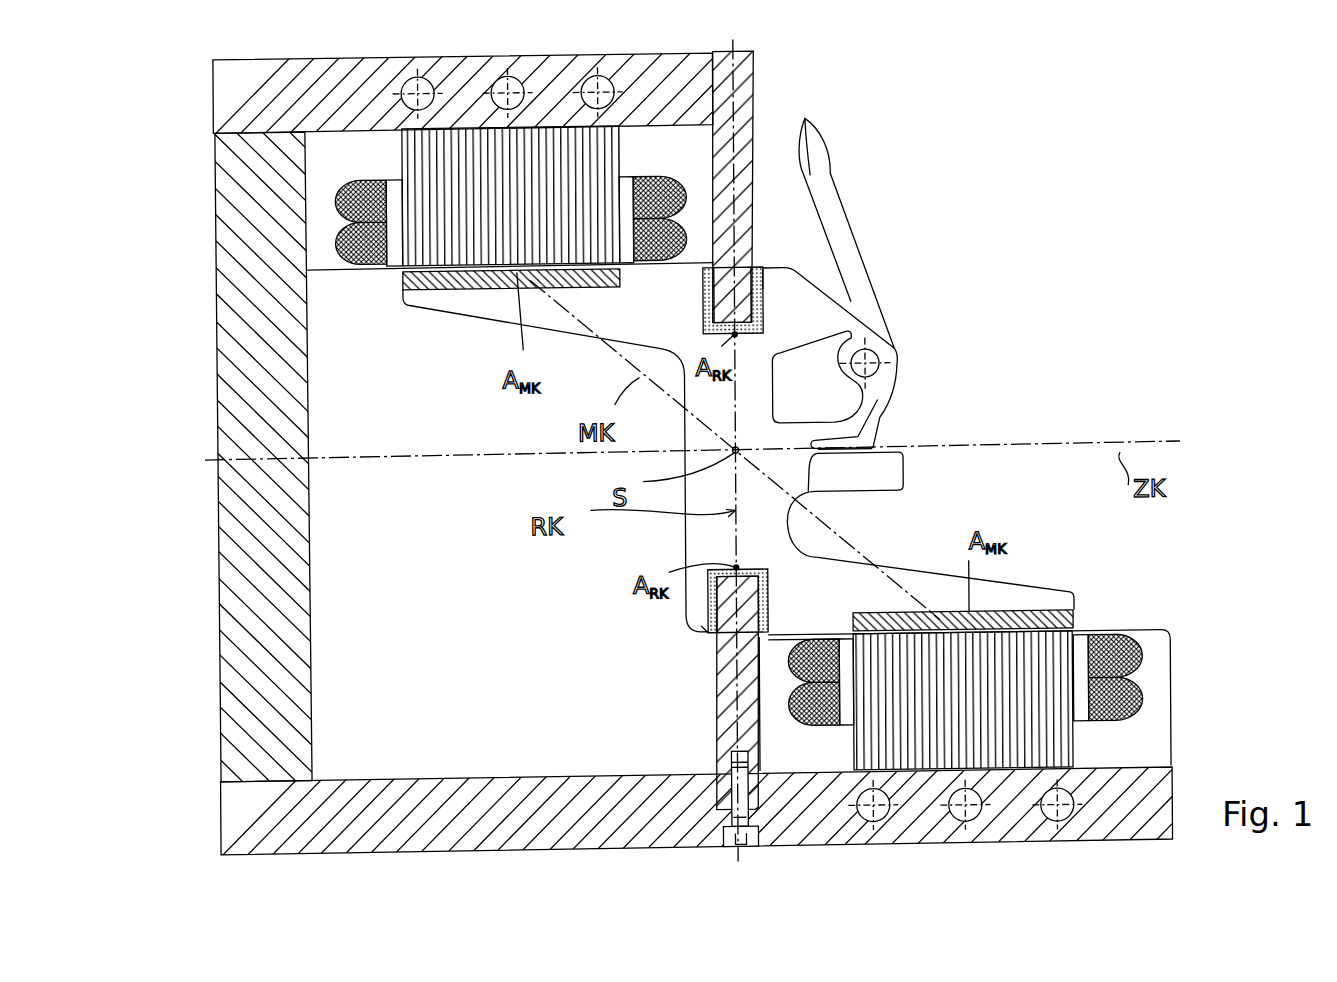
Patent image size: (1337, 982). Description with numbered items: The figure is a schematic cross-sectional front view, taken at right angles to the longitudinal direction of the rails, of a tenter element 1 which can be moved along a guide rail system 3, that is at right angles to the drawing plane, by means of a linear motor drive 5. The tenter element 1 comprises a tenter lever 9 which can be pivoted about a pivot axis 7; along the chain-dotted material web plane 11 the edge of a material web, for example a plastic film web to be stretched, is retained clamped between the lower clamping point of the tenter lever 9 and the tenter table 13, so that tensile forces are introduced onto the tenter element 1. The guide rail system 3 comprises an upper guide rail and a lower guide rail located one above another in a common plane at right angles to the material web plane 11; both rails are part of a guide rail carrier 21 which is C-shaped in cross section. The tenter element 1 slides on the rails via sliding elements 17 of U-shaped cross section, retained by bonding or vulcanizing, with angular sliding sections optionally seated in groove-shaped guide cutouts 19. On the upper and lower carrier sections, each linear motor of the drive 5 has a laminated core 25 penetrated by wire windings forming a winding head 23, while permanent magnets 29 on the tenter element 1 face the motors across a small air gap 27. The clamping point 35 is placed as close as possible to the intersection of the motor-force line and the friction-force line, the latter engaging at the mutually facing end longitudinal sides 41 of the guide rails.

The tenter element 1 is at (695, 538).
The guide rail system 3 is at (756, 86).
The linear motor drive 5 is at (384, 280).
The pivot axis 7 is at (874, 366).
The tenter lever 9 is at (870, 440).
The material web plane 11 is at (1091, 447).
The tenter table 13 is at (873, 476).
The sliding elements 17 is at (705, 317).
The guide cutouts 19 is at (766, 284).
The guide rail carrier 21 is at (346, 72).
The winding head 23 is at (338, 207).
The laminated core 25 is at (472, 227).
The air gap 27 is at (405, 298).
The permanent magnets 29 is at (491, 269).
The clamping point 35 is at (856, 456).
The end longitudinal sides 41 is at (758, 329).